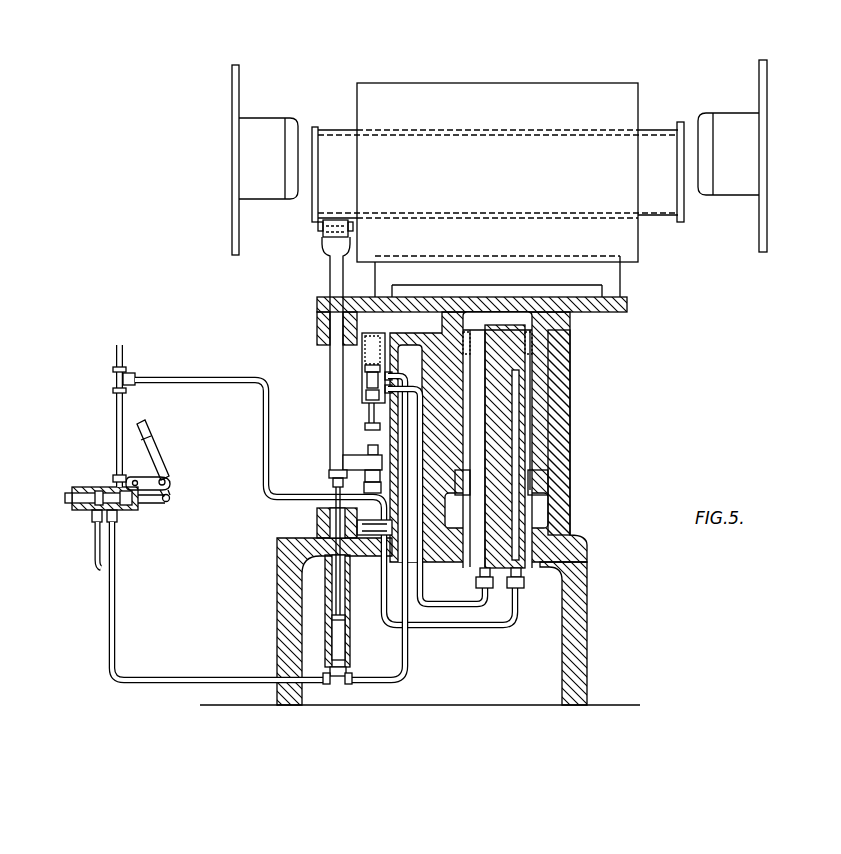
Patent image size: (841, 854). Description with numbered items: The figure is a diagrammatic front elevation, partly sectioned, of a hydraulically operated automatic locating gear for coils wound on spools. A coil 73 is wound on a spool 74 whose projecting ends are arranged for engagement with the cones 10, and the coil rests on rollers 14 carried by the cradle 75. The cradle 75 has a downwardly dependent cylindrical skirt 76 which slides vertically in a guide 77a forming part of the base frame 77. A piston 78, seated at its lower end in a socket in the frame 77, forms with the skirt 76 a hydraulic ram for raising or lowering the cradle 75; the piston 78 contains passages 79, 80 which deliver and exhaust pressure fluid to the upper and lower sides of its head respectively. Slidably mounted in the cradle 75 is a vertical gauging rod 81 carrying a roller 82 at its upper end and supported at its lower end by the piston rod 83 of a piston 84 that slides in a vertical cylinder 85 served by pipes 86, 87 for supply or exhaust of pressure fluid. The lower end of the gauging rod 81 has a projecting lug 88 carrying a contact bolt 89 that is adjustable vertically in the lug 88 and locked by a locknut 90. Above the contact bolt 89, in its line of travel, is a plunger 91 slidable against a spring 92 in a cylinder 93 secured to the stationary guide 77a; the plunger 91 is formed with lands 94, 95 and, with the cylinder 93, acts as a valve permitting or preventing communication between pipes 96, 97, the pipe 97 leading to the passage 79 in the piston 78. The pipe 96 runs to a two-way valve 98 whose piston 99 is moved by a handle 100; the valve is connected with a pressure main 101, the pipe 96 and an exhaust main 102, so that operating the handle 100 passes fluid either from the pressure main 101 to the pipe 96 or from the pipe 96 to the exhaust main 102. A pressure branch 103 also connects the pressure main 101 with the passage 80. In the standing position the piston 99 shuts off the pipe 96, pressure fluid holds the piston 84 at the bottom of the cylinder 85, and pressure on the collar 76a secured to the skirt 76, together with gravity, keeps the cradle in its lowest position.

The cones 10 is at (254, 172).
The coil 73 is at (613, 92).
The spool 74 is at (652, 140).
The rollers 14 is at (590, 274).
The cradle 75 is at (622, 304).
The roller 82 is at (323, 228).
The gauging rod 81 is at (330, 273).
The spring 92 is at (362, 345).
The land 95 is at (366, 368).
The cylinder 93 is at (368, 386).
The land 94 is at (365, 396).
The plunger 91 is at (369, 416).
The contact bolt 89 is at (377, 455).
The lug 88 is at (357, 462).
The locknut 90 is at (330, 482).
The passage 79 is at (484, 361).
The cylindrical skirt 76 is at (545, 382).
The piston 78 is at (505, 413).
The guide 77a is at (571, 440).
The passage 80 is at (515, 454).
The collar 76a is at (530, 481).
The base frame 77 is at (575, 607).
The two-way valve 98 is at (85, 490).
The piston 99 is at (108, 494).
The handle 100 is at (153, 451).
The pressure main 101 is at (117, 414).
The exhaust main 102 is at (95, 536).
The pressure branch 103 is at (186, 378).
The pipe 96 is at (117, 546).
The pipe 97 is at (424, 591).
The pipe 87 is at (369, 536).
The piston rod 83 is at (333, 506).
The piston 84 is at (334, 612).
The vertical cylinder 85 is at (350, 640).
The pipe 86 is at (396, 682).